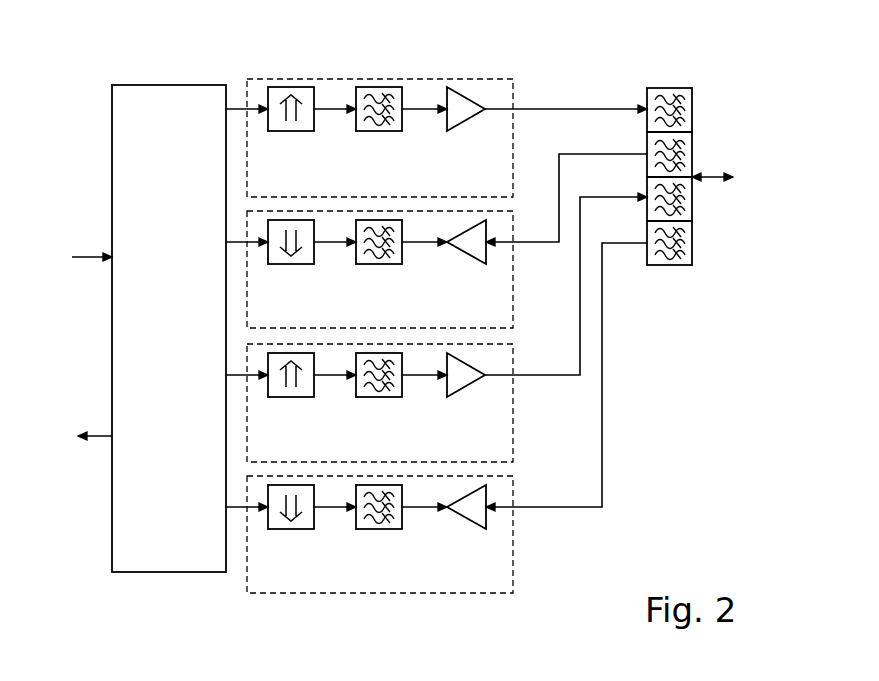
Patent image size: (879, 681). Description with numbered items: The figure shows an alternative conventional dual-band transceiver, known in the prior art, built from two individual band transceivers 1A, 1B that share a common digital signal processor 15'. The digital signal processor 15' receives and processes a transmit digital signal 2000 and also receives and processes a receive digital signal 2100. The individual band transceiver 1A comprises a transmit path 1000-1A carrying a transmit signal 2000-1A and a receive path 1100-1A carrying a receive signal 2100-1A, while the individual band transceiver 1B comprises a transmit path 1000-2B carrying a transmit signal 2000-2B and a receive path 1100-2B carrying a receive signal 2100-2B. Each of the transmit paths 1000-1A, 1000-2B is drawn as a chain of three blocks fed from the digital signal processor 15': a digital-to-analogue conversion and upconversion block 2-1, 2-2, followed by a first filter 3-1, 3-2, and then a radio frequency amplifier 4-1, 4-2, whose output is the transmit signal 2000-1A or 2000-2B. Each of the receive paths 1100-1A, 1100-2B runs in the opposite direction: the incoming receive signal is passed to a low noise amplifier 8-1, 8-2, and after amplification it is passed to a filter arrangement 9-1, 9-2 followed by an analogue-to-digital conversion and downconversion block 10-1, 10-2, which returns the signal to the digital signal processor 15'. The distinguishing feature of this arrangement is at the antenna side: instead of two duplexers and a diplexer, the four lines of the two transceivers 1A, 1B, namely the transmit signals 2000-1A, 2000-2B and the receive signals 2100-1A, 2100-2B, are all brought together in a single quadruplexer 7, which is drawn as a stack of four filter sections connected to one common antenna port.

The digital signal processor 15' is at (169, 328).
The transmit digital signal 2000 is at (68, 257).
The receive digital signal 2100 is at (68, 436).
The individual band transceiver 1A is at (553, 67).
The individual band transceiver 1B is at (565, 559).
The transmit path 1000-1A is at (482, 65).
The transmit path 1000-2B is at (540, 377).
The digital-to-analogue conversion and upconversion block 2-1 is at (278, 88).
The first filter 3-1 is at (372, 88).
The radio frequency amplifier 4-1 is at (460, 95).
The analogue-to-digital conversion and downconversion block 10-1 is at (302, 264).
The filter arrangement 9-1 is at (378, 264).
The low noise amplifier 8-1 is at (470, 255).
The digital-to-analogue conversion and upconversion block 2-2 is at (292, 397).
The first filter 3-2 is at (378, 397).
The radio frequency amplifier 4-2 is at (470, 384).
The analogue-to-digital conversion and downconversion block 10-2 is at (302, 529).
The filter arrangement 9-2 is at (378, 529).
The low noise amplifier 8-2 is at (470, 520).
The transmit signal 2000-1A is at (612, 108).
The receive signal 2100-1A is at (562, 153).
The receive path 1100-1A is at (580, 215).
The transmit signal 2000-2B is at (580, 290).
The receive signal 2100-2B is at (602, 403).
The receive path 1100-2B is at (602, 483).
The quadruplexer 7 is at (700, 232).